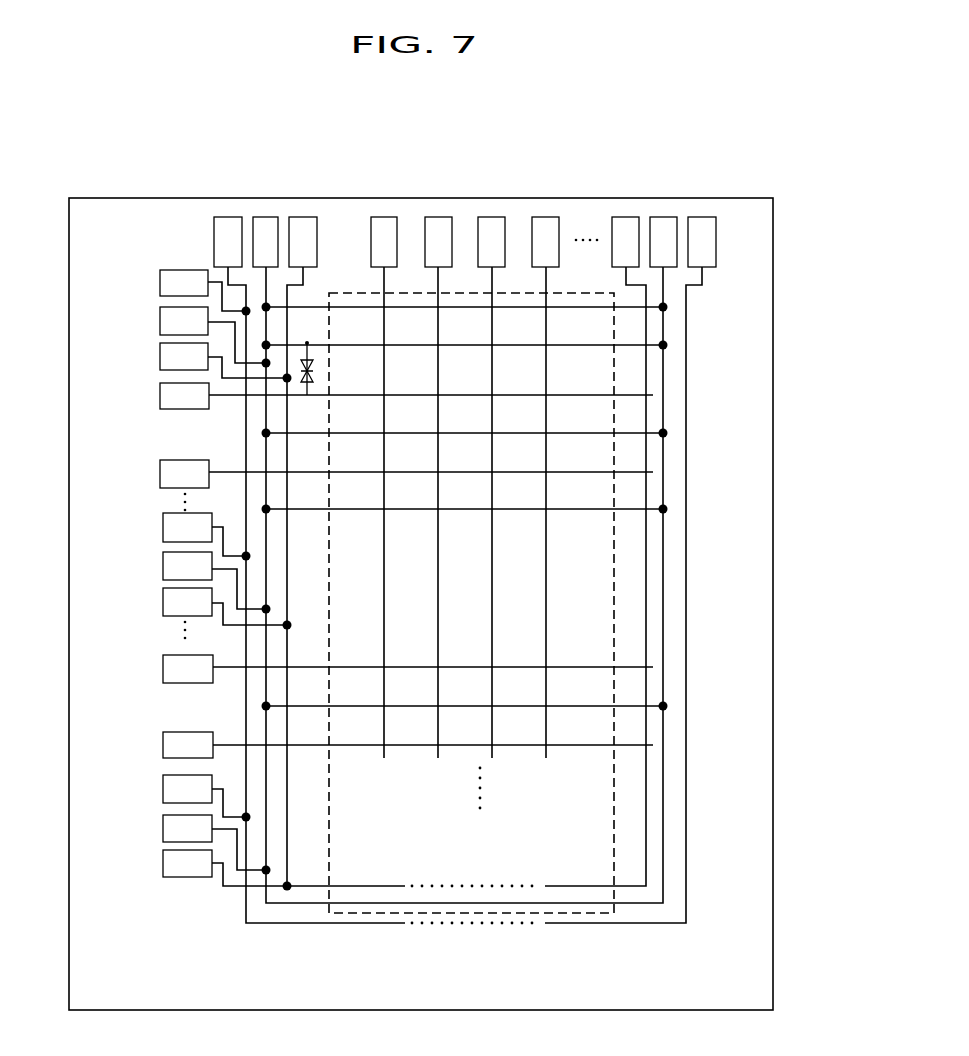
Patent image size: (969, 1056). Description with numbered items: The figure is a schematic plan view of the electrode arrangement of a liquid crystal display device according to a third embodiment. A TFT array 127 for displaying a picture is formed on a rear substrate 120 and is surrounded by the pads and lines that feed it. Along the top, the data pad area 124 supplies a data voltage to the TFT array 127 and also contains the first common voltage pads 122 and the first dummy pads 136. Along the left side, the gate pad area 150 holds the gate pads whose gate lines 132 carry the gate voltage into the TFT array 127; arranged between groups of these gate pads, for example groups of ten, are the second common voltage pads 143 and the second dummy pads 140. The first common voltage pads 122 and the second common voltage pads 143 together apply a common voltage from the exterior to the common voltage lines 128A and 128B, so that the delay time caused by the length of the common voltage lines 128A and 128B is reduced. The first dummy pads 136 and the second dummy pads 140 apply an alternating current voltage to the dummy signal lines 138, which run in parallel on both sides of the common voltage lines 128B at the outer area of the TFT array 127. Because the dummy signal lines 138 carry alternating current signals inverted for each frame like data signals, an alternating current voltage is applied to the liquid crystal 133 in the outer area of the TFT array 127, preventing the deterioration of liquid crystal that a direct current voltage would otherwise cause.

The rear substrate 120 is at (770, 208).
The first common voltage pads 122 is at (265, 217).
The data pads 124 is at (545, 212).
The TFT array 127 is at (612, 369).
The common voltage line 128A is at (628, 433).
The common voltage line 128B is at (268, 415).
The gate lines 132 is at (452, 394).
The liquid crystal 133 is at (312, 359).
The first dummy pads 136 is at (226, 217).
The dummy signal lines 138 is at (248, 453).
The second dummy pads 140 is at (183, 270).
The second common voltage pads 143 is at (160, 323).
The gate pad area 150 is at (148, 393).